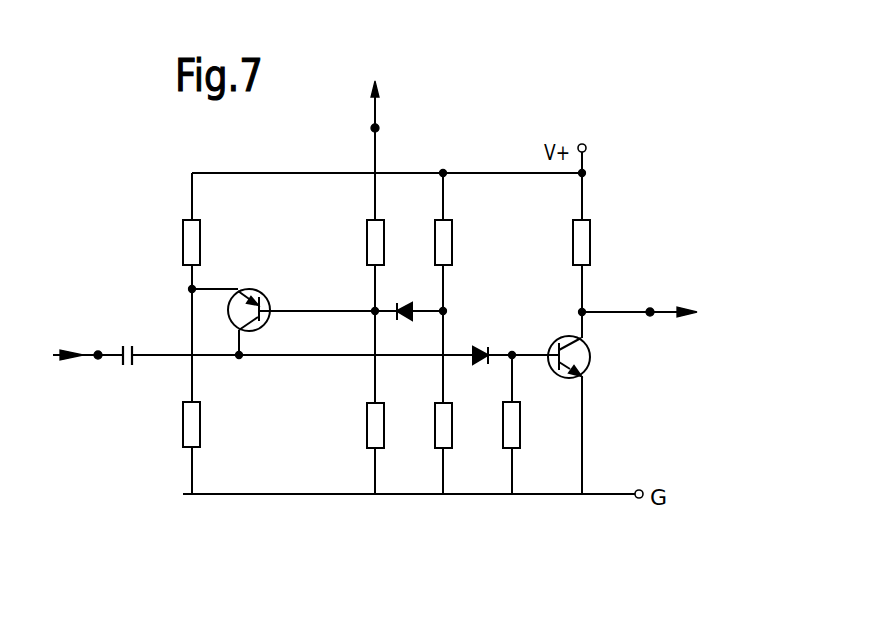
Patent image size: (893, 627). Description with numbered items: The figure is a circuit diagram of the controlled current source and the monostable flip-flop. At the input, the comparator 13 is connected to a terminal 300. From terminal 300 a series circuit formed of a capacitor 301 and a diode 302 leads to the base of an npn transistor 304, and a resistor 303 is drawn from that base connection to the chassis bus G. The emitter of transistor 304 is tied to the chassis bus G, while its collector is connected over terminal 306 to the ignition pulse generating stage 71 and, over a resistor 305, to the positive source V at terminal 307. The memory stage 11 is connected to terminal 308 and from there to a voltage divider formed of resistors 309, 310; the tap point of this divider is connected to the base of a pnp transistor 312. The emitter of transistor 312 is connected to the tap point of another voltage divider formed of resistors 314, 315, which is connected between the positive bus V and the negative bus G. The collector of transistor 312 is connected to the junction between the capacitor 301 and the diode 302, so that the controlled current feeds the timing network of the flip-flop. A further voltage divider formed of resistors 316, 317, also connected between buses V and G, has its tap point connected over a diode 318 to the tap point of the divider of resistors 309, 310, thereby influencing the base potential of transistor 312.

The memory stage 11 is at (379, 92).
The comparator 13 is at (70, 352).
The ignition pulse generating stage 71 is at (696, 303).
The terminal 300 is at (98, 351).
The capacitor 301 is at (134, 351).
The diode 302 is at (485, 350).
The resistor 303 is at (514, 424).
The npn transistor 304 is at (590, 345).
The resistor 305 is at (585, 244).
The terminal 306 is at (658, 301).
The terminal 307 is at (587, 150).
The terminal 308 is at (371, 128).
The resistor 309 is at (371, 244).
The resistor 310 is at (374, 425).
The pnp transistor 312 is at (253, 291).
The resistor 314 is at (190, 244).
The resistor 315 is at (182, 424).
The resistor 316 is at (447, 244).
The resistor 317 is at (446, 425).
The diode 318 is at (402, 302).